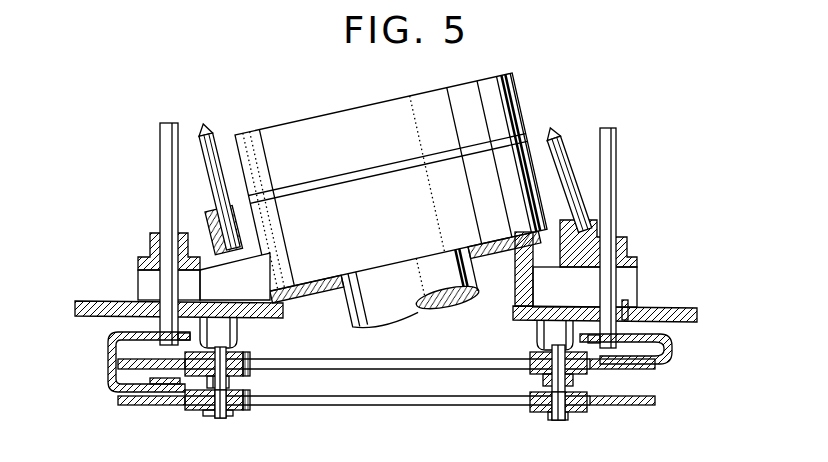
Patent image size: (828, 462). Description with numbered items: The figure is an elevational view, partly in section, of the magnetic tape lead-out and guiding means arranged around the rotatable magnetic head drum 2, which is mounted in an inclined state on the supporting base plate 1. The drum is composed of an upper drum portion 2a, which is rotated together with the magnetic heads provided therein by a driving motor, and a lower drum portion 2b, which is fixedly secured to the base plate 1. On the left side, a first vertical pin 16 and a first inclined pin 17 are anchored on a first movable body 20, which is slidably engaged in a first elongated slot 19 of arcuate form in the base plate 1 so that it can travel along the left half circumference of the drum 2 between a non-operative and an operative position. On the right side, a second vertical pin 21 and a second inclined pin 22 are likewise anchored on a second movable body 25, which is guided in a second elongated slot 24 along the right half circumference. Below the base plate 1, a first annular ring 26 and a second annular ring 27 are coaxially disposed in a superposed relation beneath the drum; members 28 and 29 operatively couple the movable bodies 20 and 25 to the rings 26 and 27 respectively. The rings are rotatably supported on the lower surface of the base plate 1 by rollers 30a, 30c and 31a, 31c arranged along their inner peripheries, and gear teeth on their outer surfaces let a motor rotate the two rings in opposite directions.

The supporting base plate 1 is at (682, 306).
The rotatable magnetic head drum 2 is at (375, 210).
The upper drum portion 2a is at (288, 130).
The lower drum portion 2b is at (273, 263).
The first vertical pin 16 is at (168, 169).
The first inclined pin 17 is at (222, 106).
The first elongated slot 19 is at (148, 306).
The first movable body 20 is at (152, 262).
The second vertical pin 21 is at (614, 172).
The second inclined pin 22 is at (560, 128).
The second elongated slot 24 is at (628, 305).
The second movable body 25 is at (636, 258).
The first annular ring 26 is at (372, 404).
The second annular ring 27 is at (420, 364).
The coupling member 28 is at (107, 364).
The coupling member 29 is at (670, 350).
The roller 30a is at (248, 406).
The roller 30c is at (534, 408).
The roller 31a is at (248, 355).
The roller 31c is at (536, 353).